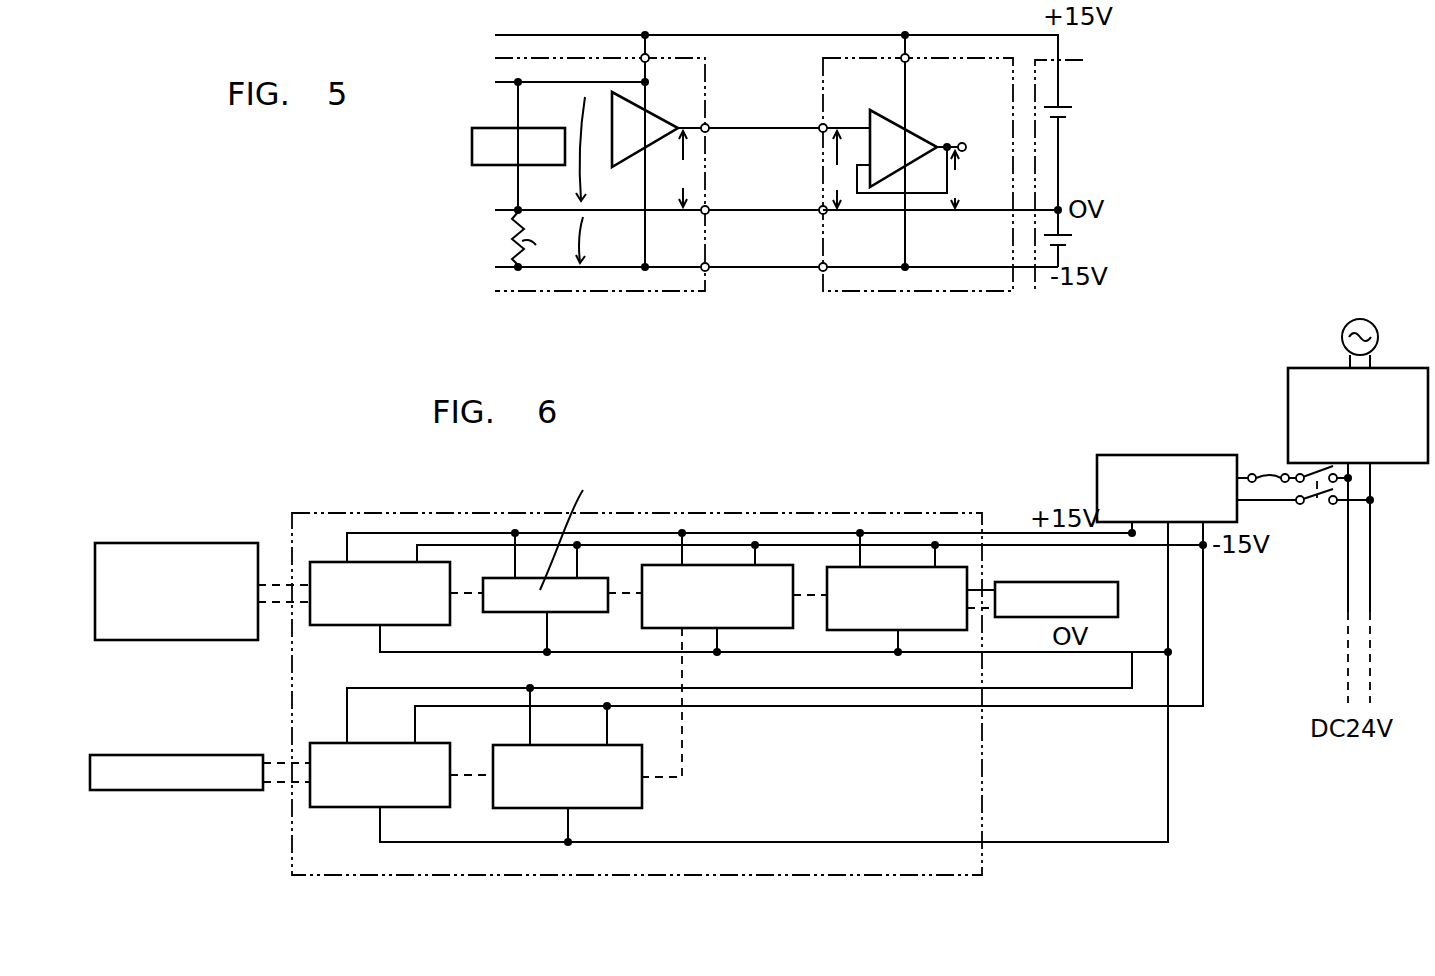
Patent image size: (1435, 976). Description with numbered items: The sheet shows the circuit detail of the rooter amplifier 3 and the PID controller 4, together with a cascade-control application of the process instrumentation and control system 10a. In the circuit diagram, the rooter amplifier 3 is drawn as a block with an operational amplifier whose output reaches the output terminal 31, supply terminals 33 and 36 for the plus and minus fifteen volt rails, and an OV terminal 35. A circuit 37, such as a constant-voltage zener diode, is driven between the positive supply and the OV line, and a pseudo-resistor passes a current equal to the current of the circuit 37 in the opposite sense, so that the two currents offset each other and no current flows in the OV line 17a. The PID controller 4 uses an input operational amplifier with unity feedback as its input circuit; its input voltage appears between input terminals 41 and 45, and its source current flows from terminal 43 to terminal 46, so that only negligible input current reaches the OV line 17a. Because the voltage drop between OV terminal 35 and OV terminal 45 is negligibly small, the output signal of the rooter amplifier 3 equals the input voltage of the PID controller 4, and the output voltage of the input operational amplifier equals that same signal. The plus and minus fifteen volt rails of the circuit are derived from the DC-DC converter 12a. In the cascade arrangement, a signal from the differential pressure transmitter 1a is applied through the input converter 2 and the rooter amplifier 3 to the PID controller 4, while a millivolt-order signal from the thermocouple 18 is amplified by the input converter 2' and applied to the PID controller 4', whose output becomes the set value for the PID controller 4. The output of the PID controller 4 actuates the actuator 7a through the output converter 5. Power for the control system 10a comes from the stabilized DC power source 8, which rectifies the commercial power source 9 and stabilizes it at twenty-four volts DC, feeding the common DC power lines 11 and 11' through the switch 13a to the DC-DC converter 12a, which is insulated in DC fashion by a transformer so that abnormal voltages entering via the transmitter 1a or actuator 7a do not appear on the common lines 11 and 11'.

In FIG. 6, the differential pressure transmitter 1a is at (172, 543).
In FIG. 6, the input converter 2 is at (380, 576).
In FIG. 6, the input converter 2' is at (380, 755).
In FIG. 5, the rooter amplifier 3 is at (613, 291).
In FIG. 6, the rooter amplifier 3 is at (498, 578).
In FIG. 5, the PID controller 4 is at (918, 181).
In FIG. 6, the PID controller 4 is at (704, 653).
In FIG. 6, the PID controller 4' is at (562, 765).
In FIG. 6, the output signal converter 5 is at (827, 575).
In FIG. 6, the actuator 7a is at (1045, 582).
In FIG. 6, the stabilized DC power source 8 is at (1288, 387).
In FIG. 6, the commercial power source 9 is at (1342, 331).
In FIG. 6, the process instrumentation and control system 10a is at (354, 513).
In FIG. 6, the common DC power line 11 is at (1327, 583).
In FIG. 6, the common DC power line 11' is at (1397, 583).
In FIG. 5, the DC-DC converter 12a is at (1043, 291).
In FIG. 6, the DC-DC converter 12a is at (1150, 455).
In FIG. 6, the switch 13a is at (1262, 475).
In FIG. 5, the OV line 17a is at (1027, 212).
In FIG. 6, the thermocouple 18 is at (167, 755).
In FIG. 5, the output terminal 31 is at (708, 125).
In FIG. 5, the terminal 33 is at (648, 61).
In FIG. 5, the OV terminal 35 is at (708, 207).
In FIG. 5, the terminal 36 is at (708, 264).
In FIG. 5, the circuit 37 is at (499, 128).
In FIG. 5, the input terminal 41 is at (820, 125).
In FIG. 5, the terminal 43 is at (908, 61).
In FIG. 5, the OV terminal 45 is at (820, 207).
In FIG. 5, the terminal 46 is at (820, 264).